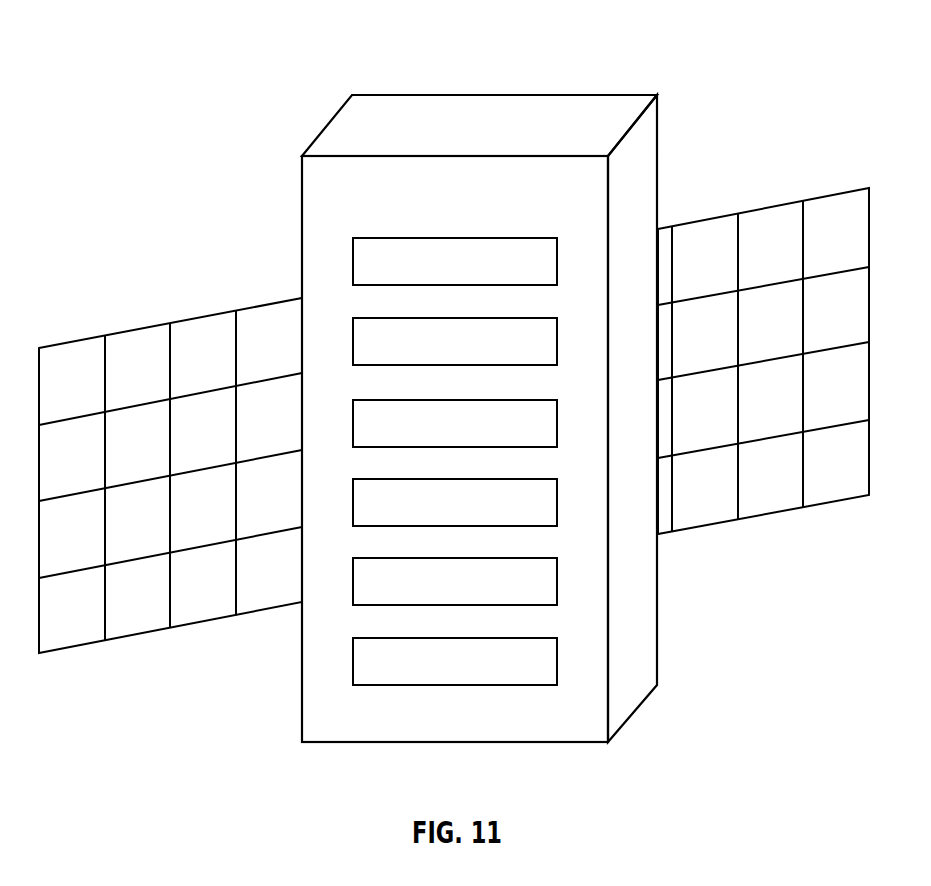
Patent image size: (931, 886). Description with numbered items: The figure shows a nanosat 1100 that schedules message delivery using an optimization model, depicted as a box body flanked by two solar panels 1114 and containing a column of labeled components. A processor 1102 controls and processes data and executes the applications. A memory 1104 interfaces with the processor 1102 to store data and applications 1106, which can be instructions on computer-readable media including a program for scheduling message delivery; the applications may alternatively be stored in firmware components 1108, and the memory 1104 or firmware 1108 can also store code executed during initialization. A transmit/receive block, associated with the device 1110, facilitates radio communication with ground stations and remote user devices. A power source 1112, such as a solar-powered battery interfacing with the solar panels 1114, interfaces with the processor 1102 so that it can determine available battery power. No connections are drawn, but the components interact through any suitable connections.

The nanosat 1100 is at (251, 72).
The processor 1102 is at (430, 237).
The memory 1104 is at (430, 317).
The applications 1106 is at (430, 399).
The firmware components 1108 is at (430, 478).
The device 1110 is at (430, 557).
The power source 1112 is at (430, 637).
The solar panels 1114 is at (143, 633).